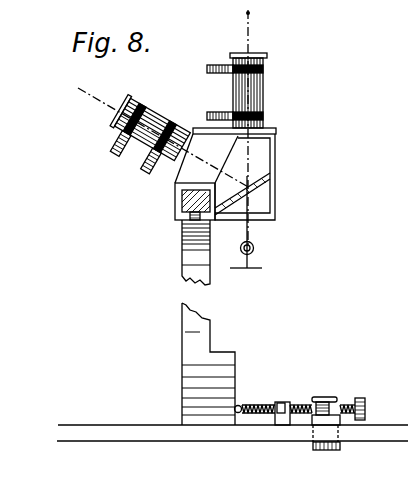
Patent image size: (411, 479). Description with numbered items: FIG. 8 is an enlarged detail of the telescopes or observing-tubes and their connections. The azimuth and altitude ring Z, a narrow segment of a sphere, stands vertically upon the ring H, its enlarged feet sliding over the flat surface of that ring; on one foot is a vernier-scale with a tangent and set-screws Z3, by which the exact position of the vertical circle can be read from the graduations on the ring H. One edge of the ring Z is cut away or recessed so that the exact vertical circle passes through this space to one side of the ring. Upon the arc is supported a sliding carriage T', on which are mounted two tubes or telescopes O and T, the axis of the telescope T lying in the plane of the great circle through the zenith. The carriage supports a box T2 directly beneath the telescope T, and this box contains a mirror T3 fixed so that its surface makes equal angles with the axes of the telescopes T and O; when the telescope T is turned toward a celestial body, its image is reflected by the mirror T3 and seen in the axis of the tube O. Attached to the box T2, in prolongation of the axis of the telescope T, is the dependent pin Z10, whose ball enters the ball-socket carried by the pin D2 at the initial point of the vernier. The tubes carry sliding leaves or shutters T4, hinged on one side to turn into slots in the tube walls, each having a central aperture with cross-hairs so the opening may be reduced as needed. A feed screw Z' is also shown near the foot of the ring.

The observing-tube O is at (163, 118).
The telescope or object-tube T is at (252, 90).
The sliding carriage T' is at (206, 147).
The box T2 is at (275, 203).
The mirror T3 is at (262, 184).
The sliding leaves or shutters T4 is at (137, 170).
The azimuth and altitude ring Z is at (190, 304).
The feed screw Z' is at (300, 408).
The vernier-scale with tangent and set-screws Z3 is at (322, 397).
The dependent pin Z10 is at (252, 248).
The pin D2 is at (250, 267).
The ring H is at (130, 416).